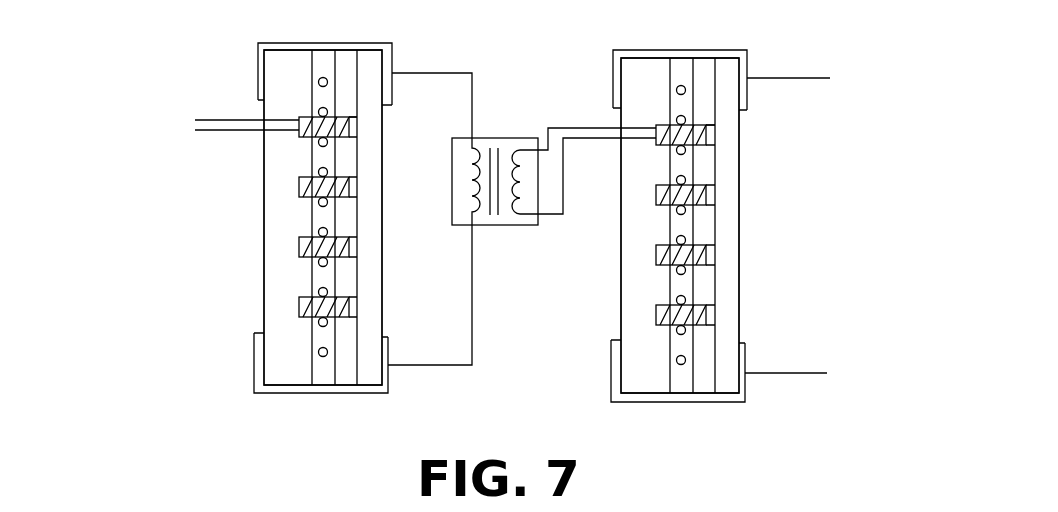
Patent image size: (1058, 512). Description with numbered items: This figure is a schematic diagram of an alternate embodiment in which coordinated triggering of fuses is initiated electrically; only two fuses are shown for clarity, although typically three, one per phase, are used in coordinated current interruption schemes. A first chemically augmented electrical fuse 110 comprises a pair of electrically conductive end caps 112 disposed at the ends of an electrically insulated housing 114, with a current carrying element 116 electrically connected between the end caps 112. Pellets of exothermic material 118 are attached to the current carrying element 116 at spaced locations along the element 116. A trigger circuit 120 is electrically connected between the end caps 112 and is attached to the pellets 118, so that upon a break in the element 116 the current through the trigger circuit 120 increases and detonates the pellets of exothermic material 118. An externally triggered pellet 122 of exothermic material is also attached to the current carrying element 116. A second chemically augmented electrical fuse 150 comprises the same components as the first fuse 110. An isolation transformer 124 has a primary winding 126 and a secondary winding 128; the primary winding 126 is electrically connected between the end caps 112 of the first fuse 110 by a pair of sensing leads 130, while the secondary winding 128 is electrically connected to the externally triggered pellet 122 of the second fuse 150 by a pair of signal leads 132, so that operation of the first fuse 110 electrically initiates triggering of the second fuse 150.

The first chemically augmented electrical fuse 110 is at (254, 289).
The electrically conductive end caps 112 is at (259, 44).
The electrically insulated housing 114 is at (264, 176).
The current carrying element 116 is at (308, 329).
The pellets of exothermic material 118 is at (299, 187).
The trigger circuit 120 is at (357, 282).
The externally triggered pellet 122 is at (356, 114).
The isolation transformer 124 is at (476, 182).
The primary winding 126 is at (472, 203).
The secondary winding 128 is at (512, 214).
The sensing leads 130 is at (437, 73).
The signal leads 132 is at (236, 120).
The second chemically augmented electrical fuse 150 is at (820, 240).